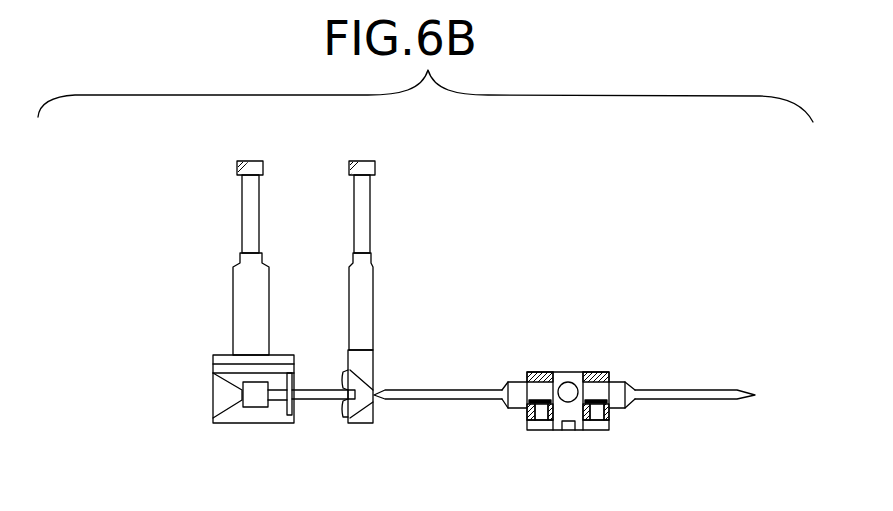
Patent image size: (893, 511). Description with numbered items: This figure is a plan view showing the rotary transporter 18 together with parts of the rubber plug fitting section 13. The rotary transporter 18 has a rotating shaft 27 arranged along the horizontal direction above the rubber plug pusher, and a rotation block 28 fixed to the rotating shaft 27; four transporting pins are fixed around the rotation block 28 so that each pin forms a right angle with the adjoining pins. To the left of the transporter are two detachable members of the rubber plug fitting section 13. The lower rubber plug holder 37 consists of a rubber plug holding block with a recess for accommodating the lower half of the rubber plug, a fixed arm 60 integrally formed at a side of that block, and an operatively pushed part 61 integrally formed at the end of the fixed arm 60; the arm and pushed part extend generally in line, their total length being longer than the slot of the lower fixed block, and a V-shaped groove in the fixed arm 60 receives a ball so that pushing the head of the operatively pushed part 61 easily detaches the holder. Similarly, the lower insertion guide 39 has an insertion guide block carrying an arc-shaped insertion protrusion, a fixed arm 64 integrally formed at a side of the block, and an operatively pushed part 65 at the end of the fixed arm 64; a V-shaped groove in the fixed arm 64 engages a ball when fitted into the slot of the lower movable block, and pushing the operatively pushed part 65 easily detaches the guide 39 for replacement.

The rubber plug fitting section 13 is at (397, 208).
The rotary transporter 18 is at (613, 357).
The rotating shaft 27 is at (568, 372).
The rotation block 28 is at (537, 372).
The lower rubber plug holder 37 is at (252, 434).
The lower insertion guide 39 is at (362, 434).
The fixed arm 60 is at (243, 303).
The operatively pushed part 61 is at (247, 217).
The fixed arm 64 is at (354, 308).
The operatively pushed part 65 is at (361, 217).